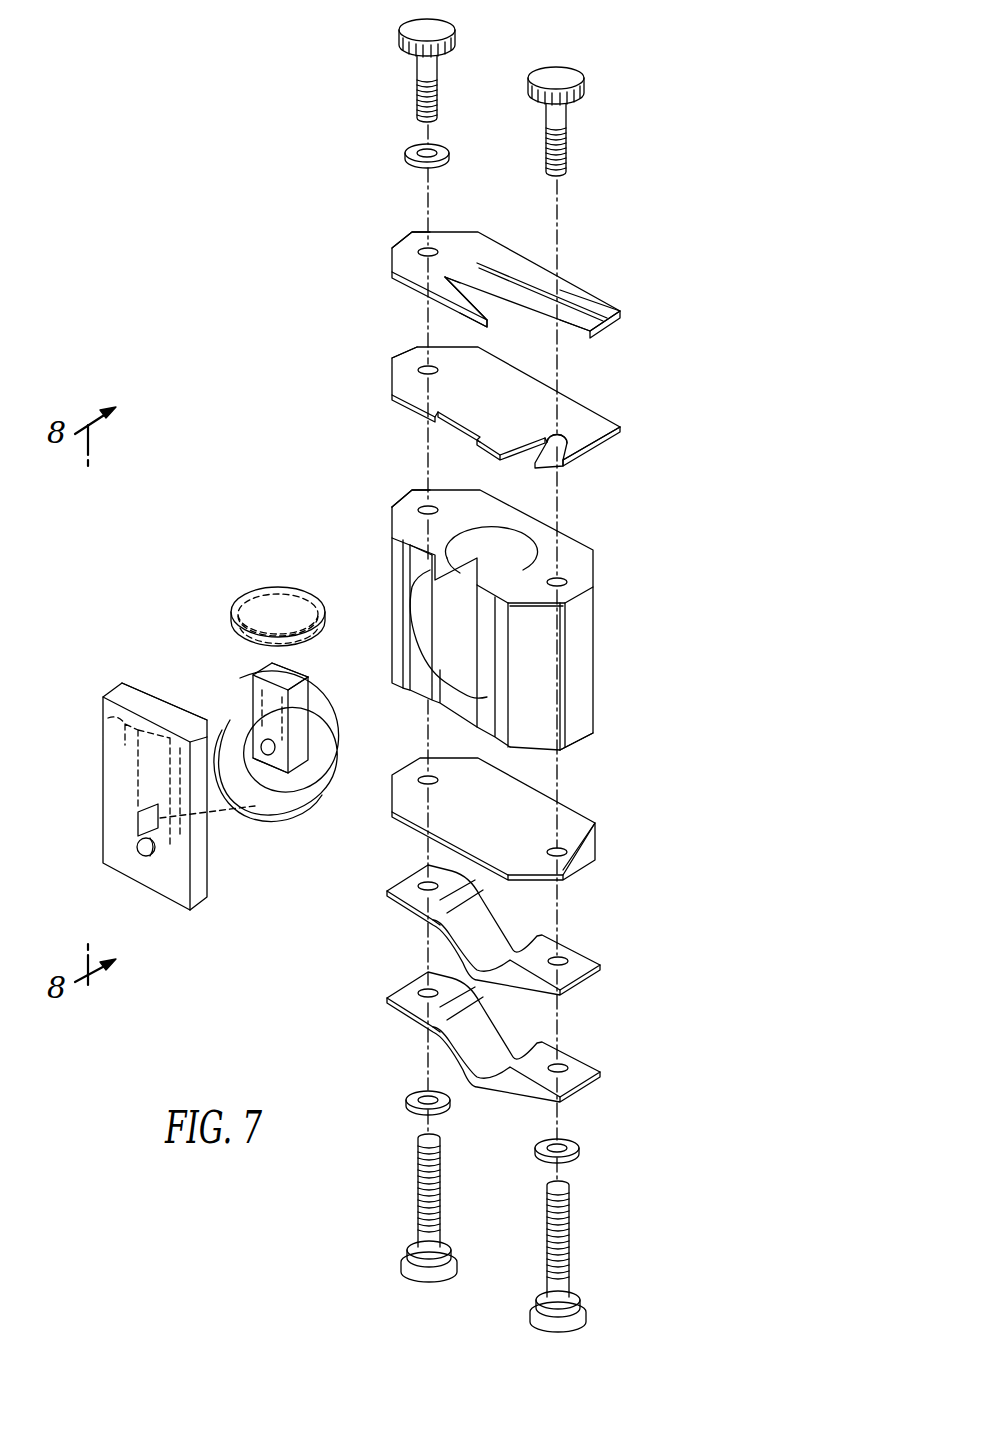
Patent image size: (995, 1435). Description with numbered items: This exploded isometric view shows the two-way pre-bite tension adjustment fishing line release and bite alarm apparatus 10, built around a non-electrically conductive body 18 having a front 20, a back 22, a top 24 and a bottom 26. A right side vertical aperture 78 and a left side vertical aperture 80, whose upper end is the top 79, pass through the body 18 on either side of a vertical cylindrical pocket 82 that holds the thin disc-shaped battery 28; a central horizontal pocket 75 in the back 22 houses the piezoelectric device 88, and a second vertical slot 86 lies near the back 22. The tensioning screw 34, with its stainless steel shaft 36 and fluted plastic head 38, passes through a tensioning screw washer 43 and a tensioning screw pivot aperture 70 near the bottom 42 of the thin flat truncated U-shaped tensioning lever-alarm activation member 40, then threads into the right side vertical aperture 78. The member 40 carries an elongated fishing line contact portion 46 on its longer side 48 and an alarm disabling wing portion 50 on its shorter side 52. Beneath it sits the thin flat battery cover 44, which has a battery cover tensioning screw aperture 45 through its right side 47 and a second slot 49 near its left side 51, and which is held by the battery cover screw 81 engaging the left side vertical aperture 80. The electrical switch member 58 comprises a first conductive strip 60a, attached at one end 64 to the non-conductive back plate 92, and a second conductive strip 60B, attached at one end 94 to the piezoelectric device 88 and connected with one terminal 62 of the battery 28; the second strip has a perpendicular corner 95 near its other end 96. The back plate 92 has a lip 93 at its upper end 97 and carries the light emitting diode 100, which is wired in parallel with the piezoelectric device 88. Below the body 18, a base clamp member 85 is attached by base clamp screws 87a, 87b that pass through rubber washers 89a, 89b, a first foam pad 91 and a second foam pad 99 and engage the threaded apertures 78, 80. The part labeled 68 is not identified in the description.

The fishing line release and bite alarm apparatus 10 is at (321, 387).
The body 18 is at (487, 619).
The front 20 is at (505, 599).
The back 22 is at (392, 552).
The top 24 is at (418, 490).
The bottom 26 is at (577, 746).
The battery 28 is at (269, 595).
The tensioning screw 34 is at (426, 63).
The shaft 36 is at (440, 73).
The head 38 is at (398, 34).
The tensioning lever-alarm activation member 40 is at (480, 262).
The bottom of lever-alarm activation member 42 is at (415, 238).
The tensioning screw washer 43 is at (412, 146).
The battery cover 44 is at (493, 406).
The battery cover tensioning screw aperture 45 is at (440, 368).
The fishing line contact portion 46 is at (578, 290).
The right side of battery cover 47 is at (401, 362).
The longer side 48 is at (507, 242).
The second slot 49 is at (552, 434).
The alarm disabling wing portion 50 is at (458, 304).
The left side of battery cover 51 is at (583, 447).
The shorter side 52 is at (435, 277).
The electrical switch member 58 is at (257, 706).
The first conductive strip 60a is at (120, 722).
The second conductive strip 60B is at (296, 678).
The battery terminal 62 is at (308, 644).
The end of first conductive strip 64 is at (140, 804).
The disc rim 68 is at (234, 622).
The tensioning screw pivot aperture 70 is at (434, 248).
The central horizontal pocket 75 is at (458, 692).
The right side vertical aperture 78 is at (434, 504).
The top of left side vertical aperture 79 is at (542, 604).
The left side vertical aperture 80 is at (568, 580).
The battery cover screw 81 is at (586, 90).
The vertical cylindrical pocket 82 is at (497, 543).
The base clamp member 85 is at (580, 1060).
The second vertical slot 86 is at (416, 556).
The base clamp screw 87a is at (416, 1156).
The base clamp screw 87b is at (572, 1214).
The piezoelectric device 88 is at (318, 790).
The rubber washer 89a is at (413, 1092).
The rubber washer 89b is at (574, 1145).
The first foam pad 91 is at (580, 953).
The back plate 92 is at (158, 788).
The lip 93 is at (212, 736).
The end of second conductive strip 94 is at (292, 752).
The perpendicular corner 95 is at (300, 686).
The other end of second conductive strip 96 is at (262, 672).
The upper end of back plate 97 is at (106, 697).
The second foam pad 99 is at (590, 840).
The light emitting diode 100 is at (136, 846).